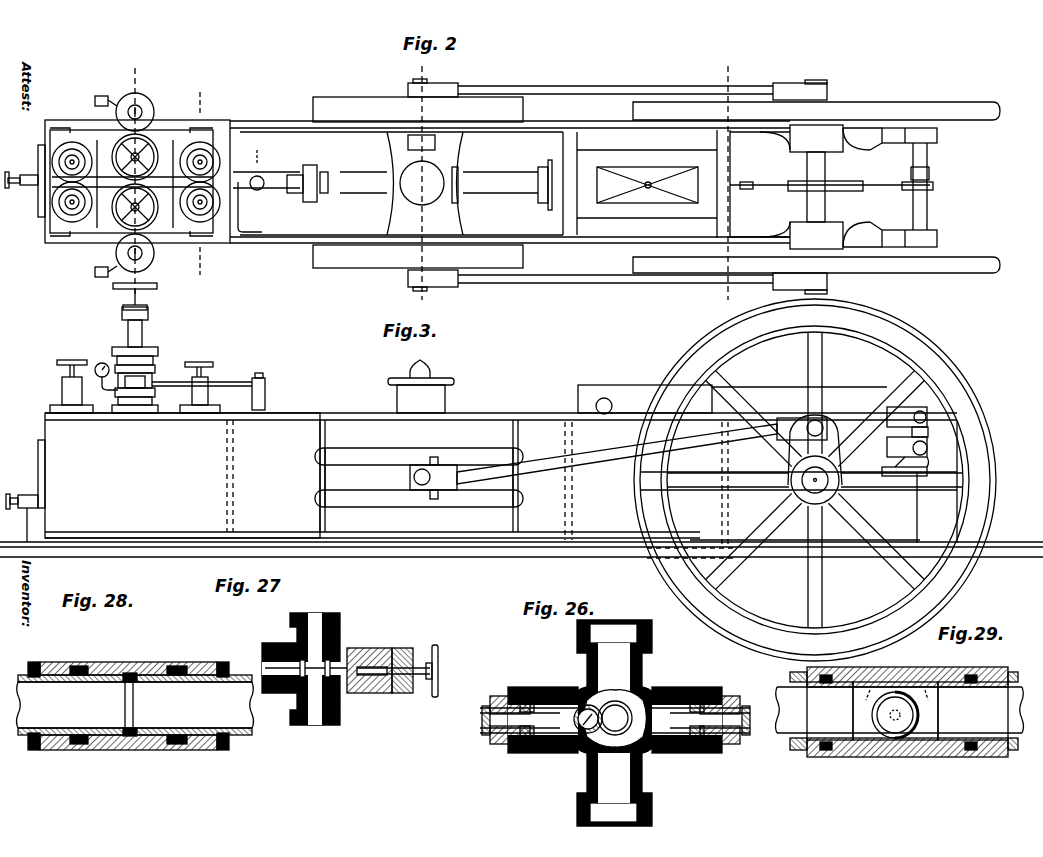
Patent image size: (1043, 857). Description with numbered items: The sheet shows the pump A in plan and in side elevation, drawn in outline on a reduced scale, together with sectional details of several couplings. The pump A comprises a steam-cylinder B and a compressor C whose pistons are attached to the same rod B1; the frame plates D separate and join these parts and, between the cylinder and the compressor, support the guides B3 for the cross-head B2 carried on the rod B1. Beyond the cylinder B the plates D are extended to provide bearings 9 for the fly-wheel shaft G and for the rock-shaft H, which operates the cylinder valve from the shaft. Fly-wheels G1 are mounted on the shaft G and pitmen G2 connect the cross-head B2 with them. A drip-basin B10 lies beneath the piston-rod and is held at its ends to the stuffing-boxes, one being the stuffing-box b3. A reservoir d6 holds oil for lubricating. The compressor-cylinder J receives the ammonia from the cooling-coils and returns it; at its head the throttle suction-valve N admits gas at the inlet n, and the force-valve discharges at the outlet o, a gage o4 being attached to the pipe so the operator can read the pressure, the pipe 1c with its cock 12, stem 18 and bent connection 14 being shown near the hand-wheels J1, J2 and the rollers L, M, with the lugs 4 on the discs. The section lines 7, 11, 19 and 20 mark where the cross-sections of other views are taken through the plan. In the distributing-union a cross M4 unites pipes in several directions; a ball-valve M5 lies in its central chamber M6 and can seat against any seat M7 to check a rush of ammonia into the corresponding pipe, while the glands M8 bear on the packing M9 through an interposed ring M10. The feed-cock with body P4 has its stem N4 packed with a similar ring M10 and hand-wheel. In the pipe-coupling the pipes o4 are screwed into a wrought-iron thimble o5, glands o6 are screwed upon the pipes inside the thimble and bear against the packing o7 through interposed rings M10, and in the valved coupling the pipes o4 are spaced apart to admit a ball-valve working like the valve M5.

In FIG. 2, the pump A is at (615, 175).
In FIG. 3, the pump A is at (501, 398).
In FIG. 2, the steam-cylinder B is at (515, 184).
In FIG. 3, the steam-cylinder B is at (649, 490).
In FIG. 2, the piston-rod B1 is at (419, 192).
In FIG. 2, the cross-head B2 is at (455, 296).
In FIG. 3, the cross-head B2 is at (426, 490).
In FIG. 2, the guides B3 is at (418, 184).
In FIG. 3, the guides B3 is at (419, 476).
In FIG. 2, the drip-basin B10 is at (490, 183).
In FIG. 2, the stuffing-box b3 is at (548, 168).
In FIG. 2, the compressor C is at (137, 181).
In FIG. 3, the compressor C is at (501, 475).
In FIG. 2, the plates D is at (510, 184).
In FIG. 3, the plates D is at (257, 476).
In FIG. 2, the fly-wheel shaft G is at (831, 187).
In FIG. 3, the fly-wheel shaft G is at (826, 483).
In FIG. 2, the fly-wheels G1 is at (816, 187).
In FIG. 3, the fly-wheels G1 is at (900, 338).
In FIG. 2, the pitmen G2 is at (730, 186).
In FIG. 3, the pitmen G2 is at (596, 456).
In FIG. 2, the rock-shaft H is at (929, 160).
In FIG. 3, the rock-shaft H is at (898, 449).
In FIG. 2, the compressor-cylinder J is at (25, 171).
In FIG. 3, the compressor-cylinder J is at (25, 485).
In FIG. 2, the roller shaft J1 is at (104, 158).
In FIG. 2, the lower hand wheel J2 is at (160, 195).
In FIG. 2, the upper rollers L is at (74, 160).
In FIG. 2, the lower rollers / valve body M is at (76, 205).
In FIG. 26, the lower rollers / valve body M is at (614, 723).
In FIG. 26, the cross M4 is at (545, 675).
In FIG. 26, the ball-valve M5 is at (555, 760).
In FIG. 26, the central chamber M6 is at (640, 690).
In FIG. 26, the seats M7 is at (612, 690).
In FIG. 26, the glands M8 is at (478, 692).
In FIG. 26, the packing M9 is at (682, 753).
In FIG. 28, the interposed ring M10 is at (78, 664).
In FIG. 27, the interposed ring M10 is at (388, 648).
In FIG. 26, the interposed ring M10 is at (520, 753).
In FIG. 2, the throttle suction-valve N is at (150, 135).
In FIG. 27, the stem N4 is at (443, 668).
In FIG. 27, the cross valve body P4 is at (304, 684).
In FIG. 2, the inlet n is at (130, 106).
In FIG. 2, the outlet o is at (130, 272).
In FIG. 3, the gage o4 is at (157, 360).
In FIG. 28, the gage o4 is at (135, 705).
In FIG. 29, the gage o4 is at (900, 711).
In FIG. 28, the thimble o5 is at (135, 696).
In FIG. 29, the thimble o5 is at (895, 711).
In FIG. 28, the glands o6 is at (48, 650).
In FIG. 29, the glands o6 is at (985, 760).
In FIG. 28, the packing o7 is at (90, 668).
In FIG. 3, the reservoir d6 is at (421, 386).
In FIG. 2, the pipe 1c is at (265, 178).
In FIG. 2, the lug 4 is at (100, 175).
In FIG. 2, the section line 7 is at (728, 183).
In FIG. 2, the bearing blocks 9 is at (815, 187).
In FIG. 2, the section line 11 is at (424, 182).
In FIG. 2, the section line 12 is at (260, 165).
In FIG. 2, the bent pipe 14 is at (262, 232).
In FIG. 2, the cock stem 18 is at (257, 190).
In FIG. 2, the section line 19 is at (137, 178).
In FIG. 2, the section line 20 is at (201, 179).